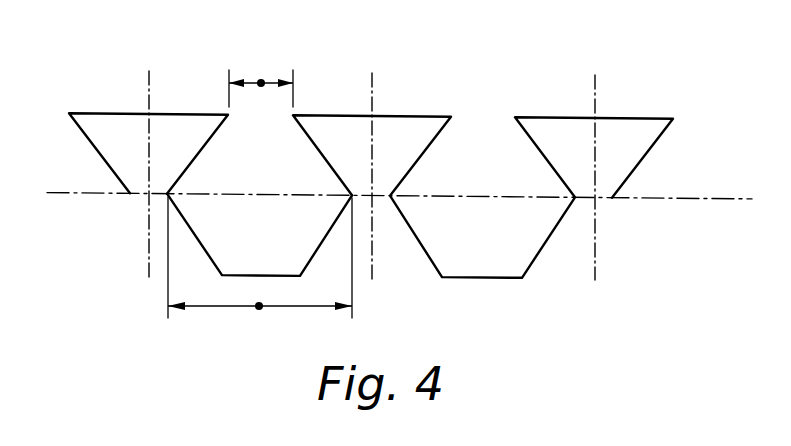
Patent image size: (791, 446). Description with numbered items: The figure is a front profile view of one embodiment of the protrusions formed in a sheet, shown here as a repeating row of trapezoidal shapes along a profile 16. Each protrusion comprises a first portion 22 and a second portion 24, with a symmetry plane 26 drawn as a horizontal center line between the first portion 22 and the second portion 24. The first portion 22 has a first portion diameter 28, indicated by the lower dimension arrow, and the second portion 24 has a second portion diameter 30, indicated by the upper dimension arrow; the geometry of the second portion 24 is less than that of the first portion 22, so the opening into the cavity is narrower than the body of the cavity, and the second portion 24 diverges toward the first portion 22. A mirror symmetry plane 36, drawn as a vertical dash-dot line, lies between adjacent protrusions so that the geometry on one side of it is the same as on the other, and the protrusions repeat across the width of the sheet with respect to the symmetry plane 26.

The corrugated profile 16 is at (403, 117).
The first portion 22 is at (202, 243).
The second portion 24 is at (203, 148).
The symmetry plane 26 is at (79, 194).
The first portion diameter 28 is at (259, 306).
The second portion diameter 30 is at (261, 83).
The mirror symmetry plane 36 is at (595, 163).